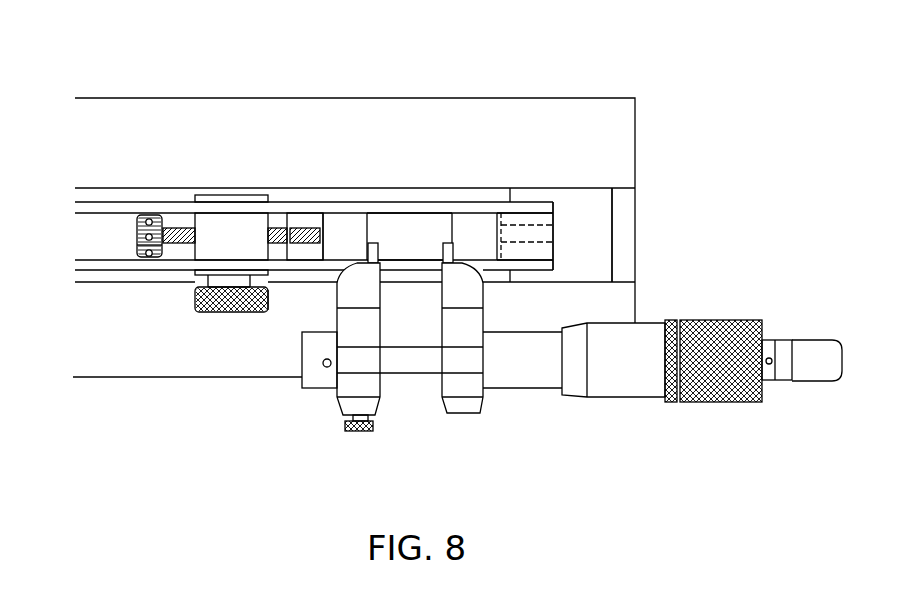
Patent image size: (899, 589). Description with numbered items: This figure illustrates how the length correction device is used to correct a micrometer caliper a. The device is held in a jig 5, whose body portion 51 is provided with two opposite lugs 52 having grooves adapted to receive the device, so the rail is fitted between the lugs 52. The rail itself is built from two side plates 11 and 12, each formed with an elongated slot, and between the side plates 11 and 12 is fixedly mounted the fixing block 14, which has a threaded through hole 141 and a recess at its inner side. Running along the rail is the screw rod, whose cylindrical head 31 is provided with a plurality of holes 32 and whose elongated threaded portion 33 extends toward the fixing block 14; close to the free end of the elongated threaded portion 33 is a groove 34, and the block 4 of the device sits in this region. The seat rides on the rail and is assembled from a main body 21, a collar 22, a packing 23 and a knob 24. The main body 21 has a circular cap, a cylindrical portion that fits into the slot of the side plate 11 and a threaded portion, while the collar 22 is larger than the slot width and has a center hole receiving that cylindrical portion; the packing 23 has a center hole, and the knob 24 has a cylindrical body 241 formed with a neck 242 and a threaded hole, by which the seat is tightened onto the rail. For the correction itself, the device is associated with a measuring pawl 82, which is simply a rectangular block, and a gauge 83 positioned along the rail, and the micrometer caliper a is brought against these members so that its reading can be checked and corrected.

The jig 5 is at (643, 188).
The body portion 51 is at (600, 135).
The lugs 52 is at (580, 212).
The side plate 11 is at (99, 211).
The side plate 12 is at (88, 276).
The cylindrical head 31 is at (137, 225).
The holes 32 is at (140, 246).
The elongated threaded portion 33 is at (177, 246).
The collar 22 is at (225, 236).
The main body 21 is at (252, 197).
The packing 23 is at (192, 285).
The knob 24 is at (214, 313).
The cylindrical body 241 is at (237, 312).
The neck 242 is at (272, 290).
The block 4 is at (302, 228).
The groove 34 is at (297, 240).
The measuring pawl 82 is at (358, 232).
The gauge 83 is at (418, 232).
The fixing block 14 is at (537, 220).
The threaded through hole 141 is at (548, 233).
The micrometer caliper a is at (628, 377).